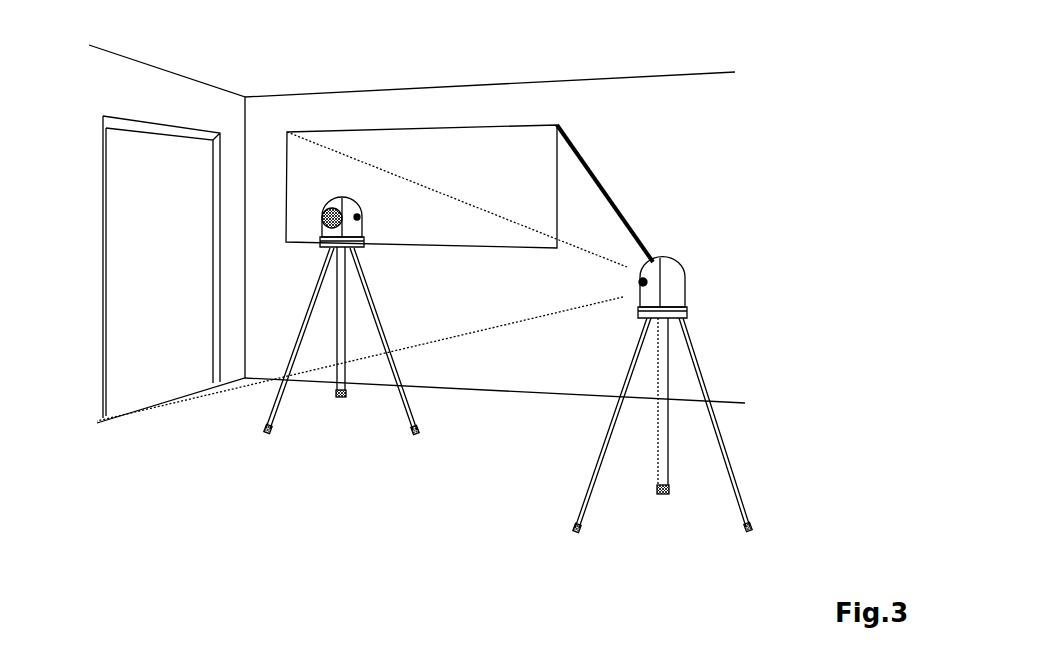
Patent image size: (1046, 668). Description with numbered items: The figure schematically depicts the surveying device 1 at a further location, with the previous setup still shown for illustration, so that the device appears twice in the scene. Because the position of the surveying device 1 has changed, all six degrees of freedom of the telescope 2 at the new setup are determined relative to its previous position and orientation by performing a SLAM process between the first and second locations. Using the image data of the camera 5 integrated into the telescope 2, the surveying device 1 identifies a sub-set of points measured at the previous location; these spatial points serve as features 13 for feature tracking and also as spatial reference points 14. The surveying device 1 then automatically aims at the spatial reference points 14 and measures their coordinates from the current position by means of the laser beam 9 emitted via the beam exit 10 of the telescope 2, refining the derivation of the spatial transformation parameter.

The surveying device 1 is at (493, 271).
The telescope 2 is at (470, 265).
The camera 5 is at (445, 215).
The laser beam 9 is at (685, 177).
The beam exit 10 is at (423, 220).
The spatial points (features) 13 is at (380, 130).
The spatial reference points 14 is at (195, 420).